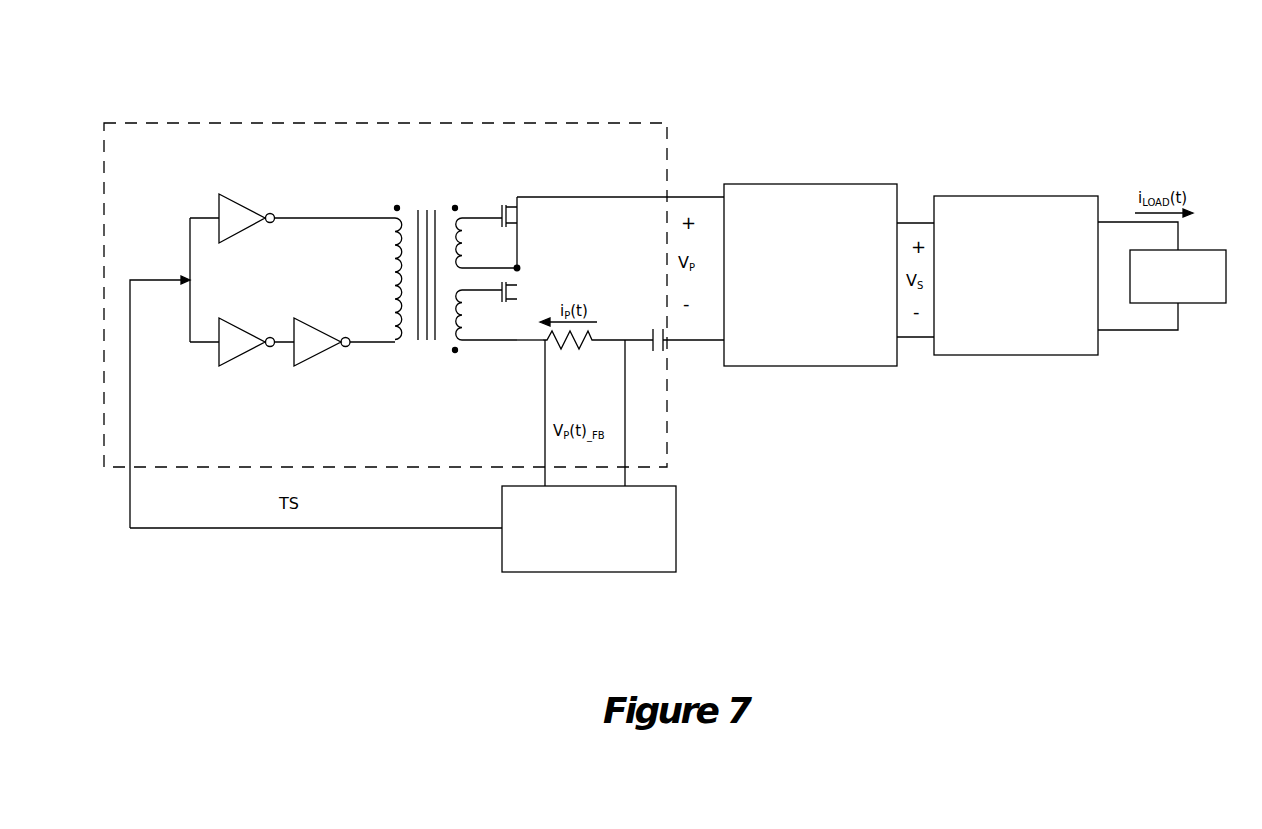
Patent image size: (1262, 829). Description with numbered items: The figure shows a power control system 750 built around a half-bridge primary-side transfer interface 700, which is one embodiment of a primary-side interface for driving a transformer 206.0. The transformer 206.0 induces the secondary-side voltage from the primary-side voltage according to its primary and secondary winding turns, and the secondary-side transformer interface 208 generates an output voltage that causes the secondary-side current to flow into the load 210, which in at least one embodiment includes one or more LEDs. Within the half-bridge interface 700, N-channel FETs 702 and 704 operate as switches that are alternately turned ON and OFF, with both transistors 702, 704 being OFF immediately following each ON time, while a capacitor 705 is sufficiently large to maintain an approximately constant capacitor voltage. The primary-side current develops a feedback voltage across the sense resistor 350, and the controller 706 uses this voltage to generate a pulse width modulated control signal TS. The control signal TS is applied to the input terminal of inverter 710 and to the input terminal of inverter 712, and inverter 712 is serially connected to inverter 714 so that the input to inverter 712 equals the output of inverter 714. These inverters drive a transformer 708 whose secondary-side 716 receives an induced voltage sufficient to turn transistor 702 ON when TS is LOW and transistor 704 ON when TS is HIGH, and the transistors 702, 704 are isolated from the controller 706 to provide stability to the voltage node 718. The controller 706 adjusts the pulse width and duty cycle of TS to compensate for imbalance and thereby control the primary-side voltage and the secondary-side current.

The half-bridge primary-side transfer interface 700 is at (384, 123).
The N-channel FET 702 is at (532, 223).
The N-channel FET 704 is at (532, 290).
The capacitor 705 is at (657, 328).
The controller 706 is at (573, 549).
The transformer 708 is at (456, 250).
The inverter 710 is at (242, 199).
The inverter 712 is at (219, 359).
The inverter 714 is at (294, 359).
The secondary-side 716 is at (460, 217).
The voltage node 718 is at (516, 267).
The sense resistor 350 is at (580, 350).
The transformer 206.0 is at (855, 184).
The secondary-side transformer interface 208 is at (990, 196).
The load 210 is at (1192, 250).
The power control system 750 is at (1032, 119).